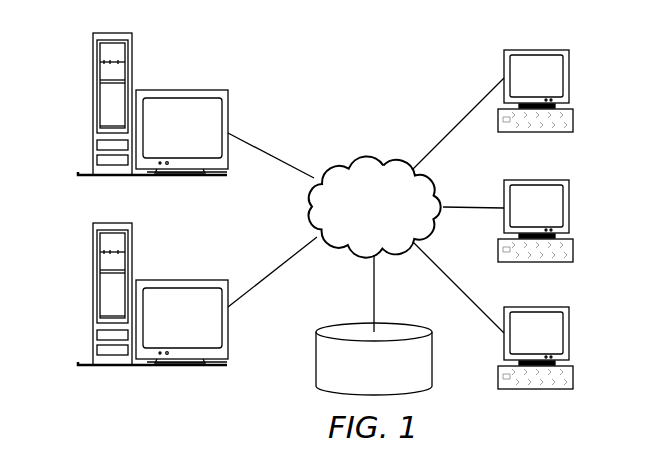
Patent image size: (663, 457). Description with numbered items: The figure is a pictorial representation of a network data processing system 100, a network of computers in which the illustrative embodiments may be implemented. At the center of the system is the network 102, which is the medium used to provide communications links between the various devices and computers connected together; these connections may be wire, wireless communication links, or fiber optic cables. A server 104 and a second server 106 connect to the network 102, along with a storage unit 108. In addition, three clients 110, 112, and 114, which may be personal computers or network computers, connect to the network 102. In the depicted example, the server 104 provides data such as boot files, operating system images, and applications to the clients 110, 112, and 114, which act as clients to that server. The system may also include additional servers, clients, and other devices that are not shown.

The network data processing system 100 is at (418, 70).
The network 102 is at (349, 163).
The server 104 is at (93, 104).
The server 106 is at (93, 294).
The storage unit 108 is at (316, 368).
The client 110 is at (569, 78).
The client 112 is at (569, 208).
The client 114 is at (569, 335).